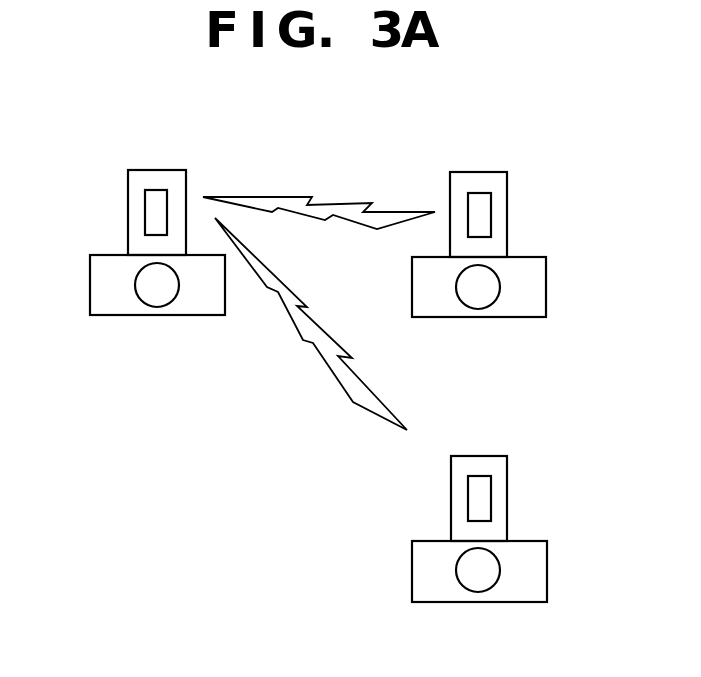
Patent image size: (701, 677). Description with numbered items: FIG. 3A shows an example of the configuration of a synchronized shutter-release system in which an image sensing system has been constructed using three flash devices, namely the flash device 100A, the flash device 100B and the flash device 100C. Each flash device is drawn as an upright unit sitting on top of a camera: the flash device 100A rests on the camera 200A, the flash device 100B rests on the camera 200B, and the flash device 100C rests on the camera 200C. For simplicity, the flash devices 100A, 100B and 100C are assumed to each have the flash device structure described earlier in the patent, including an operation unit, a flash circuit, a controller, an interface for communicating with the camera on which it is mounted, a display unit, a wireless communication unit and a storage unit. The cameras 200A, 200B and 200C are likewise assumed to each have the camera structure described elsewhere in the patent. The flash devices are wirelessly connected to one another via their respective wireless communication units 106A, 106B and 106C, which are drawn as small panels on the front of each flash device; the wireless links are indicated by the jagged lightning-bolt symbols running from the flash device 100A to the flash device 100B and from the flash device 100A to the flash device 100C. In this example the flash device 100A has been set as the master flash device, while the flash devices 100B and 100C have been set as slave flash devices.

The flash device 100A is at (166, 170).
The wireless communication unit 106A is at (156, 215).
The camera 200A is at (193, 316).
The flash device 100B is at (488, 172).
The wireless communication unit 106B is at (482, 217).
The camera 200B is at (515, 318).
The flash device 100C is at (488, 456).
The wireless communication unit 106C is at (482, 500).
The camera 200C is at (515, 603).